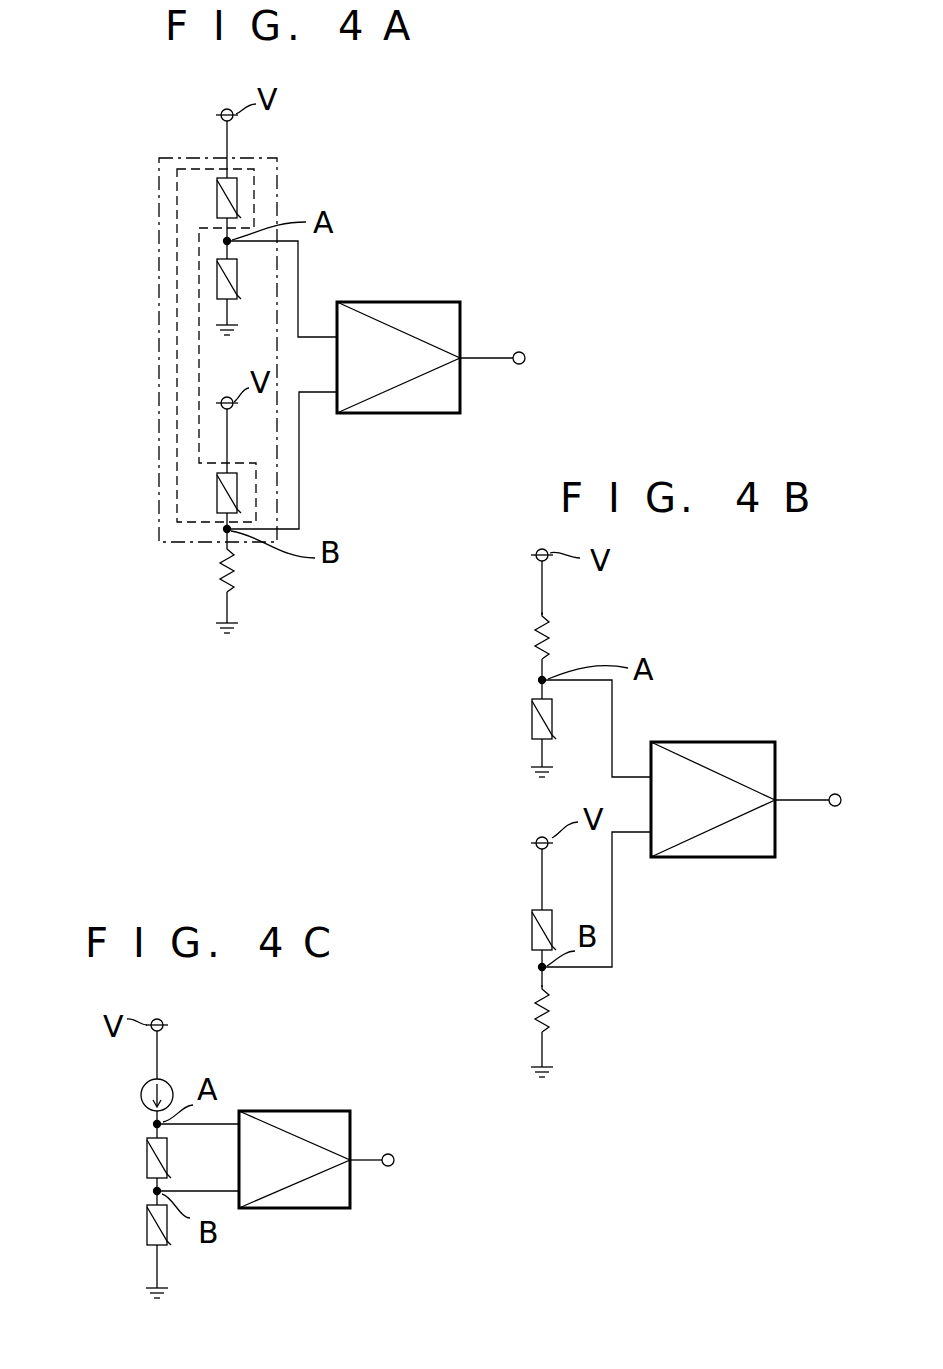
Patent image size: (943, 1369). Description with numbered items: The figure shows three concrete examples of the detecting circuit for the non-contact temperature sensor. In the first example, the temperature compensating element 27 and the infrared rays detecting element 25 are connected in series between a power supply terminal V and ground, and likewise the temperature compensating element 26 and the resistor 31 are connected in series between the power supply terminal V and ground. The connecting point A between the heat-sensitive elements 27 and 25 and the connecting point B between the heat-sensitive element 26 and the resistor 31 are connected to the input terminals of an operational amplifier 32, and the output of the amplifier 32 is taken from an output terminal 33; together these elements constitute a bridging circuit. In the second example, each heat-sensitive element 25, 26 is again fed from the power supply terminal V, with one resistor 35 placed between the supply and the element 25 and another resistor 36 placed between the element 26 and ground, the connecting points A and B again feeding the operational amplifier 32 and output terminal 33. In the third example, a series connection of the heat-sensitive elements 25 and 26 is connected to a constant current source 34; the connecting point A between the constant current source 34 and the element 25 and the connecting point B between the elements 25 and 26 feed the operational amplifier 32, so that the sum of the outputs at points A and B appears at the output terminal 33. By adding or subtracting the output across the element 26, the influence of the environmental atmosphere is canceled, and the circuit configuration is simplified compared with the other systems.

In FIG. 4A, the infrared rays detecting element 25 is at (215, 288).
In FIG. 4B, the infrared rays detecting element 25 is at (531, 721).
In FIG. 4C, the infrared rays detecting element 25 is at (147, 1163).
In FIG. 4A, the temperature compensating element 26 is at (217, 492).
In FIG. 4B, the temperature compensating element 26 is at (529, 941).
In FIG. 4C, the temperature compensating element 26 is at (147, 1235).
In FIG. 4A, the temperature compensating element 27 is at (215, 208).
In FIG. 4A, the resistor 31 is at (234, 578).
In FIG. 4A, the operational amplifier 32 is at (397, 302).
In FIG. 4B, the operational amplifier 32 is at (735, 742).
In FIG. 4C, the operational amplifier 32 is at (302, 1210).
In FIG. 4A, the output terminal 33 is at (525, 353).
In FIG. 4B, the output terminal 33 is at (838, 793).
In FIG. 4C, the output terminal 33 is at (386, 1167).
In FIG. 4C, the constant current source 34 is at (141, 1088).
In FIG. 4B, the resistor 35 is at (553, 628).
In FIG. 4B, the resistor 36 is at (554, 1010).